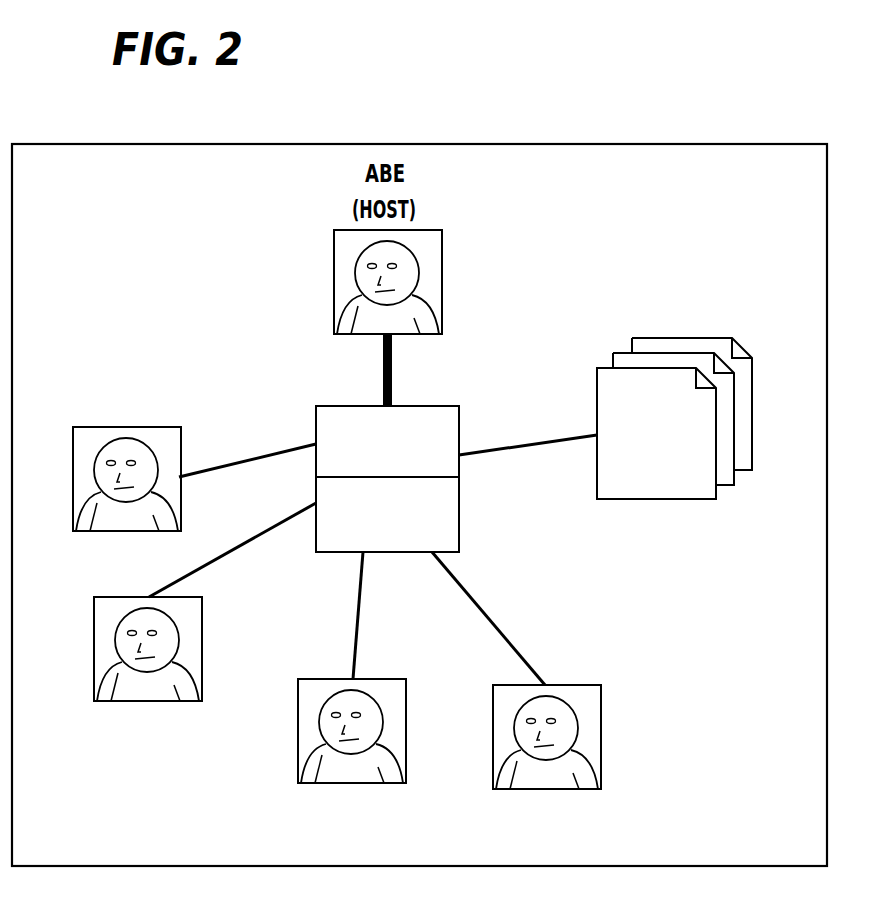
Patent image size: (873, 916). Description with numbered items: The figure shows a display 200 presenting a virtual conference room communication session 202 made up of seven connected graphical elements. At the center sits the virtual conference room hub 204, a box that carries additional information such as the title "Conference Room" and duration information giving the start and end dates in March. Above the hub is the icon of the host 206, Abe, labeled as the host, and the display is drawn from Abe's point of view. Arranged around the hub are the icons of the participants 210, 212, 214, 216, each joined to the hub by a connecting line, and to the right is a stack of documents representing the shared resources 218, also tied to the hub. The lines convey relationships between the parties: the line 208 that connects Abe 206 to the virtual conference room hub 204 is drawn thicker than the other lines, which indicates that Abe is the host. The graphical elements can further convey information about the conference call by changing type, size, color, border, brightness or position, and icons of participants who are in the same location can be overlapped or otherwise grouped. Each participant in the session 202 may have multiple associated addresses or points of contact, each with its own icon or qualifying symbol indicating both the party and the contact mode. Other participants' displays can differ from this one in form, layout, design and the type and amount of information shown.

The display 200 is at (583, 143).
The virtual conference room communication session 202 is at (571, 279).
The virtual conference room hub 204 is at (460, 487).
The host 206 is at (333, 272).
The line 208 is at (393, 374).
The participant 210 is at (129, 426).
The participant 212 is at (140, 704).
The participant 214 is at (349, 786).
The participant 216 is at (543, 791).
The shared resources 218 is at (681, 337).